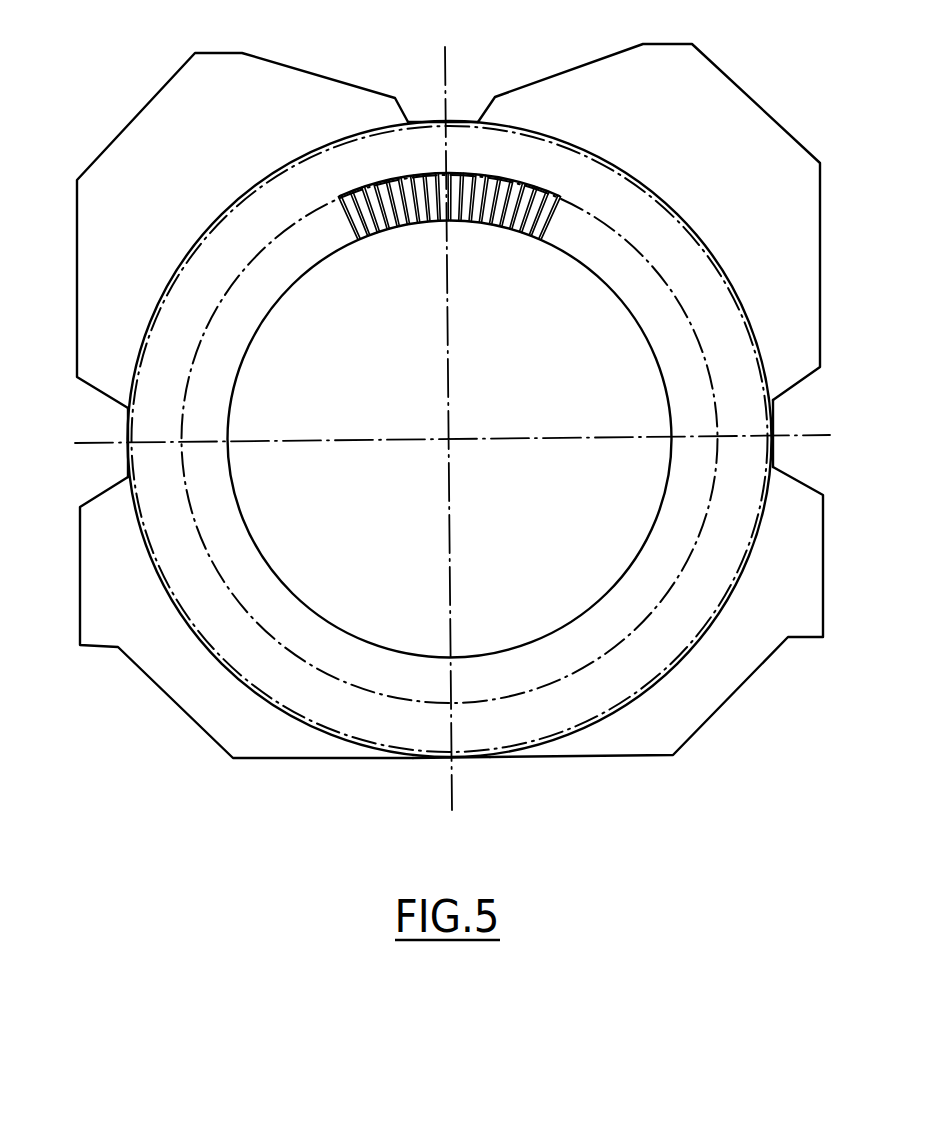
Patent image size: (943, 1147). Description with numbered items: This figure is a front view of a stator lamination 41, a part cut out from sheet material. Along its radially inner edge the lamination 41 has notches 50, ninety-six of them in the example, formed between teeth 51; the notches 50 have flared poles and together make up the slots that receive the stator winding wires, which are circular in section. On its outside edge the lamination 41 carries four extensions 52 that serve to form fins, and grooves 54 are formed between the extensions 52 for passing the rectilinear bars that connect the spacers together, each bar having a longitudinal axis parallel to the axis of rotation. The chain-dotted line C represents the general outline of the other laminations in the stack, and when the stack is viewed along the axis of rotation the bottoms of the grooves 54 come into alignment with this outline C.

The lamination 41 is at (800, 577).
The chain-dotted line C is at (767, 503).
The extensions 52 is at (768, 163).
The grooves 54 is at (430, 120).
The notches 50 is at (375, 230).
The teeth 51 is at (380, 232).